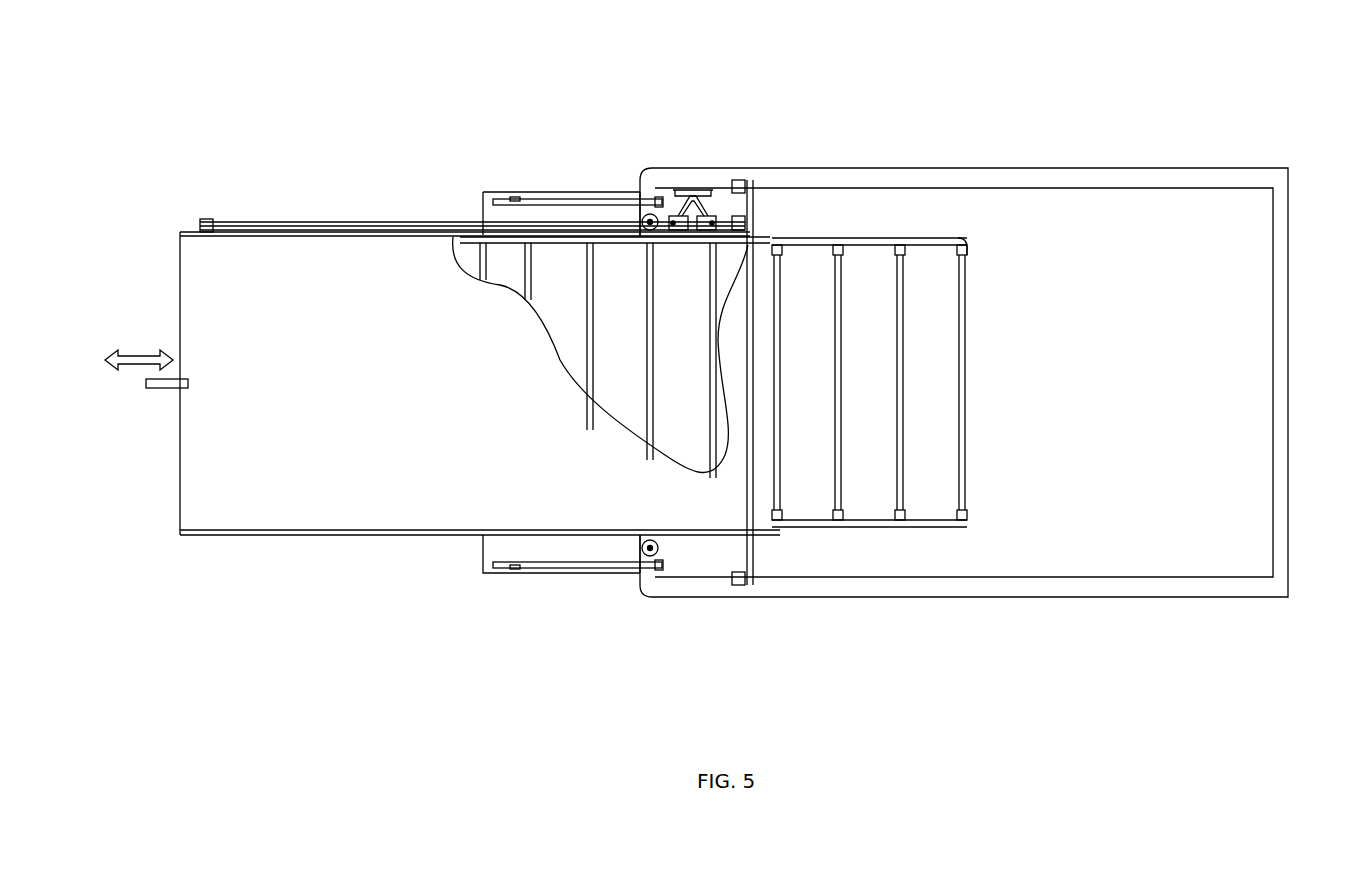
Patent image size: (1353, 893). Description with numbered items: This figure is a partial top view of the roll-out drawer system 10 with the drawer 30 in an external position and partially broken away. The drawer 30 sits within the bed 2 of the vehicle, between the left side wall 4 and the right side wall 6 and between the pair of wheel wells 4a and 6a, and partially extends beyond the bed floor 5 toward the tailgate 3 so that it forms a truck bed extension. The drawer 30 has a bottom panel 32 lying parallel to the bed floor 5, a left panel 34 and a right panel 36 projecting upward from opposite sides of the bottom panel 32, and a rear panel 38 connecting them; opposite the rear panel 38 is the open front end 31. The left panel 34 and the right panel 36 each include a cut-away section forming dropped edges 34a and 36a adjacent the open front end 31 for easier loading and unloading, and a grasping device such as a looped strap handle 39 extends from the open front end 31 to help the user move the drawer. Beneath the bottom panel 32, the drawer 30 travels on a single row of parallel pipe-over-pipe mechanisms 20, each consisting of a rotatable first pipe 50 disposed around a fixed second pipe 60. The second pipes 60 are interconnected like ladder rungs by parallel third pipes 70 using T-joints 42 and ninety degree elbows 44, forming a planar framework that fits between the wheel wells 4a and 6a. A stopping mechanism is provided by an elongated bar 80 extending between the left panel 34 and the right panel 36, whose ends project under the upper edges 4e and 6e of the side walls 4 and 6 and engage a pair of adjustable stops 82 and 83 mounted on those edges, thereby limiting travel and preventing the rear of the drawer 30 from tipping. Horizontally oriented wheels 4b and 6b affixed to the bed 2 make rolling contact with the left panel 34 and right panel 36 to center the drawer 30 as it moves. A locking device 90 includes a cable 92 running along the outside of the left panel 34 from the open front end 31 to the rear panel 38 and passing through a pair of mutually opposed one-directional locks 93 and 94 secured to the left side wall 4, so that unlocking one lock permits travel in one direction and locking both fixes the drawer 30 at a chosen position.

The roll-out drawer system 10 is at (190, 170).
The bed 2 is at (1268, 608).
The tailgate 3 is at (512, 550).
The left side wall 4 is at (1197, 168).
The wheel well 4a is at (1018, 205).
The horizontal wheel 4b is at (640, 192).
The upper edge 4e is at (1245, 175).
The bed floor 5 is at (1262, 386).
The right side wall 6 is at (1135, 597).
The wheel well 6a is at (1010, 565).
The horizontal wheel 6b is at (640, 590).
The upper edge 6e is at (1200, 590).
The pipe-over-pipe mechanism 20 is at (922, 350).
The drawer 30 is at (438, 381).
The open front end 31 is at (180, 332).
The bottom panel 32 is at (190, 272).
The left panel 34 is at (312, 240).
The dropped edge 34a is at (440, 236).
The right panel 36 is at (345, 525).
The dropped edge 36a is at (280, 537).
The rear panel 38 is at (775, 512).
The handle 39 is at (150, 390).
The T-joint 42 is at (900, 242).
The 90 degree elbow 44 is at (967, 240).
The first pipe 50 is at (916, 381).
The second pipe 60 is at (967, 247).
The third pipe 70 is at (810, 530).
The elongated bar 80 is at (757, 560).
The stop 82 is at (742, 180).
The stop 83 is at (735, 588).
The locking device 90 is at (682, 322).
The cable 92 is at (250, 222).
The one-directional lock 93 is at (680, 236).
The one-directional lock 94 is at (713, 222).